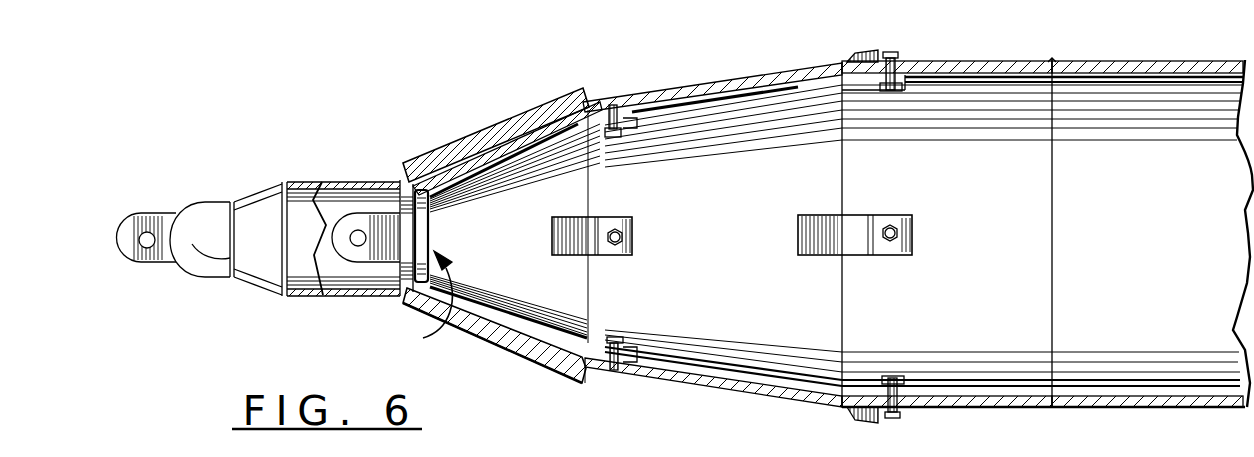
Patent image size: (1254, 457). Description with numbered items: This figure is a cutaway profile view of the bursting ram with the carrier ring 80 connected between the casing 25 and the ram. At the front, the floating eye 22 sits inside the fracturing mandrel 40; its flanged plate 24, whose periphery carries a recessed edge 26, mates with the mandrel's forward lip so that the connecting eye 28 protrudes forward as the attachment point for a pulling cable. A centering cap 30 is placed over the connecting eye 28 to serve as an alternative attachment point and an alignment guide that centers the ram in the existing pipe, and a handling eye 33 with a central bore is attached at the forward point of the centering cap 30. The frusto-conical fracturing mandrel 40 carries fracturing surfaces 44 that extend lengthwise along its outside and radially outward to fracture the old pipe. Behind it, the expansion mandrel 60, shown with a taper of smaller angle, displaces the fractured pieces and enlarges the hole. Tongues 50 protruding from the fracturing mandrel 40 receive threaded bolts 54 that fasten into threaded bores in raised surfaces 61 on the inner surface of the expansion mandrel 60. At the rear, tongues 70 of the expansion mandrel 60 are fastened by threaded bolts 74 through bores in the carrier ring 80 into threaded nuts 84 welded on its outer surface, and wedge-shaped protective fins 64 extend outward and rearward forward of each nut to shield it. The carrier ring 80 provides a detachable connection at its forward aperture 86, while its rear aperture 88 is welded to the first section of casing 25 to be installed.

The floating eye 22 is at (416, 306).
The flanged plate 24 is at (430, 227).
The casing 25 is at (1148, 305).
The recessed edge 26 is at (402, 207).
The connecting eye 28 is at (369, 262).
The centering cap 30 is at (204, 214).
The handling eye 33 is at (128, 222).
The fracturing mandrel 40 is at (488, 282).
The fracturing surfaces 44 is at (500, 131).
The tongues 50 is at (618, 217).
The threaded bolts 54 is at (623, 237).
The expansion mandrel 60 is at (726, 297).
The raised surfaces 61 is at (649, 123).
The protective fins 64 is at (858, 52).
The tongues 70 is at (880, 214).
The threaded bolts 74 is at (898, 235).
The carrier ring 80 is at (929, 305).
The threaded nuts 84 is at (900, 52).
The forward aperture 86 is at (839, 172).
The rear aperture 88 is at (1052, 163).